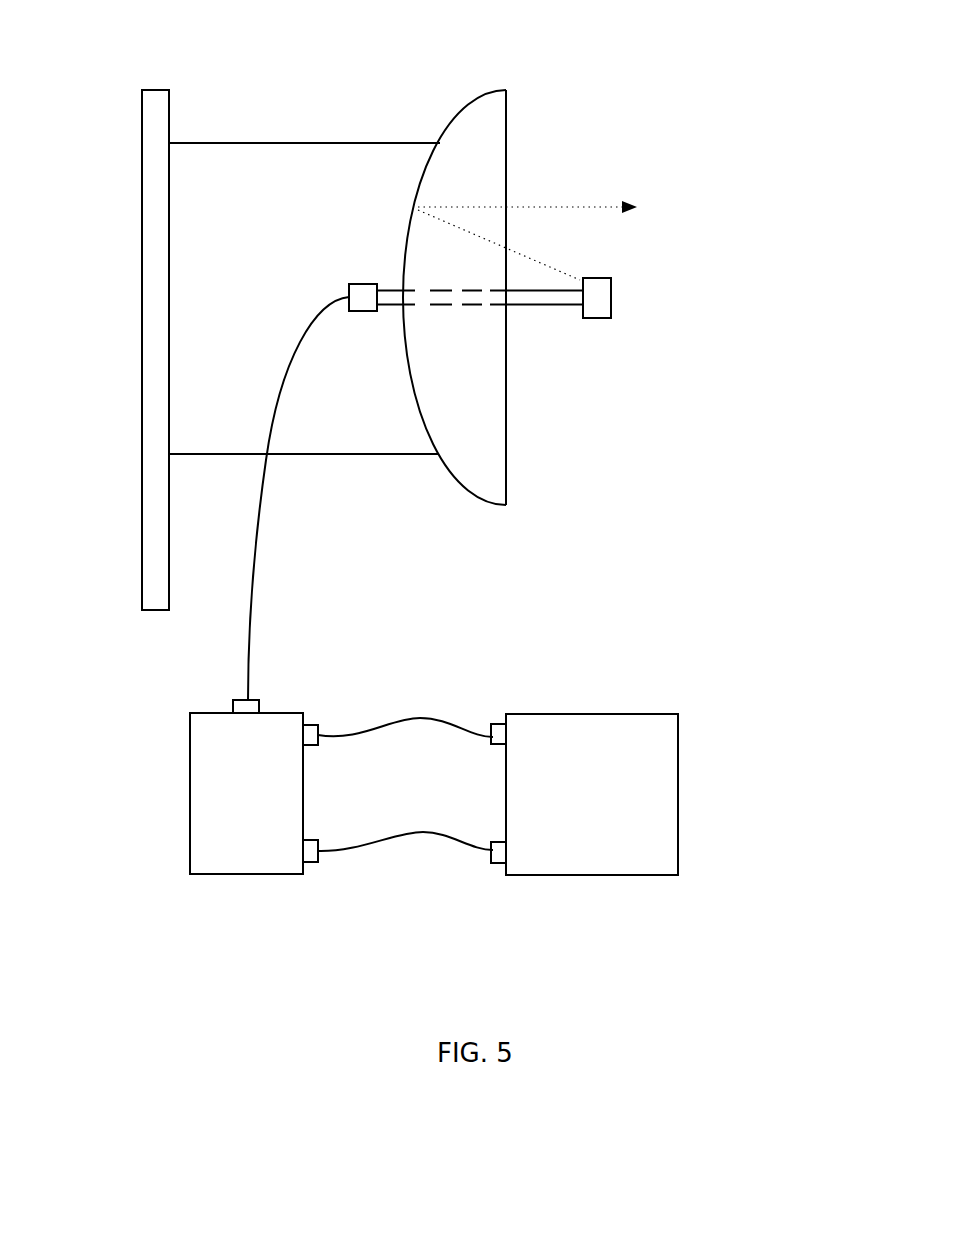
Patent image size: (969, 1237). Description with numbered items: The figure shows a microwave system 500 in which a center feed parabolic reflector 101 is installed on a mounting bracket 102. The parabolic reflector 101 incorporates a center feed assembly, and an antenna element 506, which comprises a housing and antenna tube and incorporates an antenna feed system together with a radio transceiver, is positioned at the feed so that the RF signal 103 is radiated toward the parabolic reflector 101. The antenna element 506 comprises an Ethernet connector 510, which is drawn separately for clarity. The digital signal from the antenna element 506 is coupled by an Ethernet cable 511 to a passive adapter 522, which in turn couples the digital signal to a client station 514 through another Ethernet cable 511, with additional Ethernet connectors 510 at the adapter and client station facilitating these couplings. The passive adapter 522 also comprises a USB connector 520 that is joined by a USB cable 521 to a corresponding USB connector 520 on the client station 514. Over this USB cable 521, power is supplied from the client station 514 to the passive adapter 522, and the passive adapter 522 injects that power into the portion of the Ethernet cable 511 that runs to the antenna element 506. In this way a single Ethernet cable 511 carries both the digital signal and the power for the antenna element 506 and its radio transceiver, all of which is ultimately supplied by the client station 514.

The microwave system 500 is at (414, 476).
The mounting bracket 102 is at (153, 88).
The parabolic reflector 101 is at (485, 92).
The RF signal 103 is at (550, 238).
The antenna element 506 is at (548, 322).
The Ethernet connector 510 is at (368, 283).
The Ethernet cable 511 is at (254, 563).
The client station 514 is at (639, 713).
The passive adapter 522 is at (190, 783).
The USB cable 521 is at (425, 832).
The USB connector 520 is at (313, 863).